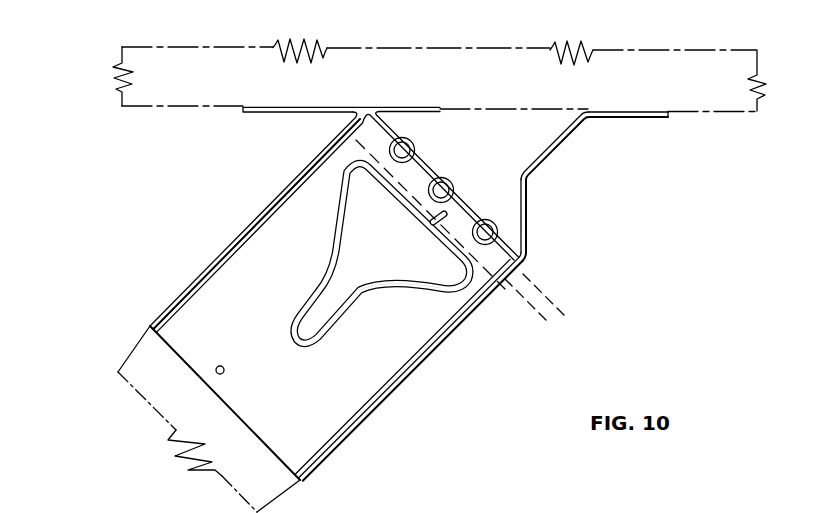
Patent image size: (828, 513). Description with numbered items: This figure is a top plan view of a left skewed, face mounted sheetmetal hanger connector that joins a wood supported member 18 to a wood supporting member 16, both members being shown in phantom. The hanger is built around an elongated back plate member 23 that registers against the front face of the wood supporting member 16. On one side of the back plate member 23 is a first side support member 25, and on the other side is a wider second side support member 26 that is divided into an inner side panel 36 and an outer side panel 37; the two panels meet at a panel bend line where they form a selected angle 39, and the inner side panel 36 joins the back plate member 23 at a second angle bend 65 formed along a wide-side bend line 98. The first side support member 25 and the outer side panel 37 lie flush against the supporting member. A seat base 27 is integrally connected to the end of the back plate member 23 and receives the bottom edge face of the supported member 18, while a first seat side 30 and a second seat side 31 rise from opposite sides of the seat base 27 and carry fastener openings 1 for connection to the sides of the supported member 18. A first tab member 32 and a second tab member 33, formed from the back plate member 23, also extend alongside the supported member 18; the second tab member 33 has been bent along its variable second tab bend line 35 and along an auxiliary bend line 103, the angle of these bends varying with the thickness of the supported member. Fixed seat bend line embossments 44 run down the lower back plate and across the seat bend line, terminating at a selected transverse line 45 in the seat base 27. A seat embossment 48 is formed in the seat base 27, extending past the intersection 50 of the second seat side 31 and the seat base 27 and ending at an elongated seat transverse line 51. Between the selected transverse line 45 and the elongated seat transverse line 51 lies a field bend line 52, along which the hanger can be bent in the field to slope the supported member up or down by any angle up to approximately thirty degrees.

The wood supporting member 16 is at (520, 47).
The wood supported member 18 is at (125, 395).
The first side support member 25 is at (258, 118).
The second side support member 26 is at (661, 121).
The seat base 27 is at (284, 411).
The first seat side 30 is at (178, 300).
The second seat side 31 is at (332, 451).
The first tab member 32 is at (308, 171).
The second tab member 33 is at (481, 301).
The second tab bend line 35 is at (527, 183).
The inner side panel 36 is at (553, 153).
The outer side panel 37 is at (633, 119).
The selected angle 39 is at (607, 119).
The fixed seat bend line embossments 44 is at (418, 146).
The back plate member 23 is at (433, 176).
The wide-side bend line 98 is at (521, 223).
The auxiliary bend line 103 is at (528, 257).
The second angle bend 65 is at (468, 212).
The seat embossment 48 is at (304, 303).
The intersection 50 is at (398, 289).
The elongated seat transverse line 51 is at (438, 223).
The selected transverse line 45 is at (550, 318).
The field bend line 52 is at (540, 333).
The fastener openings 1 is at (220, 366).